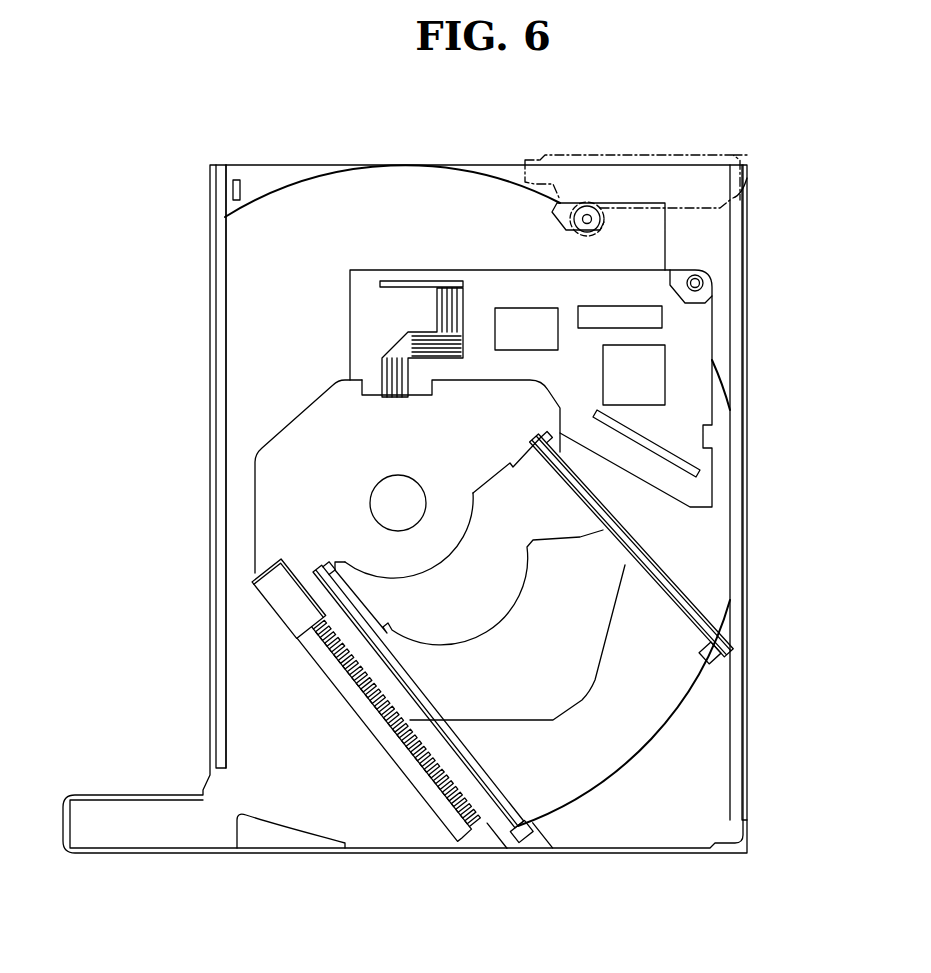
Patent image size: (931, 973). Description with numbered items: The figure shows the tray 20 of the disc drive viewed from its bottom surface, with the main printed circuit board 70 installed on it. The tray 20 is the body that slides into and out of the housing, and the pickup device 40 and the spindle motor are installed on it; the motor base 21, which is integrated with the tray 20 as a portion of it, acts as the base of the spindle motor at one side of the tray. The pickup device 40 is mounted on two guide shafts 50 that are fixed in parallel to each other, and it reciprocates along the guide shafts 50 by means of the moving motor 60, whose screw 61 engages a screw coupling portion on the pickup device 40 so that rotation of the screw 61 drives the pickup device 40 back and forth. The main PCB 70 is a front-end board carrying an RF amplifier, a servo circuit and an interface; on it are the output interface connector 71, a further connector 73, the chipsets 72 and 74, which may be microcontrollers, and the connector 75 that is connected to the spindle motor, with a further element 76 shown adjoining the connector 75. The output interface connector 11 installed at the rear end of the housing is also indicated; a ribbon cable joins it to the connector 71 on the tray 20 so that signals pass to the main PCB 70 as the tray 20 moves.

The output interface connector 11 is at (641, 152).
The tray 20 is at (640, 862).
The motor base 21 is at (444, 549).
The pickup device 40 is at (572, 686).
The guide shafts 50 is at (665, 610).
The moving motor 60 is at (272, 593).
The screw 61 is at (310, 643).
The main printed circuit board 70 is at (346, 306).
The output interface connector 71 is at (621, 308).
The chipset 72 is at (527, 310).
The connector 73 is at (700, 472).
The chipset 74 is at (660, 372).
The connector 75 is at (416, 281).
The flexible cable 76 is at (462, 315).